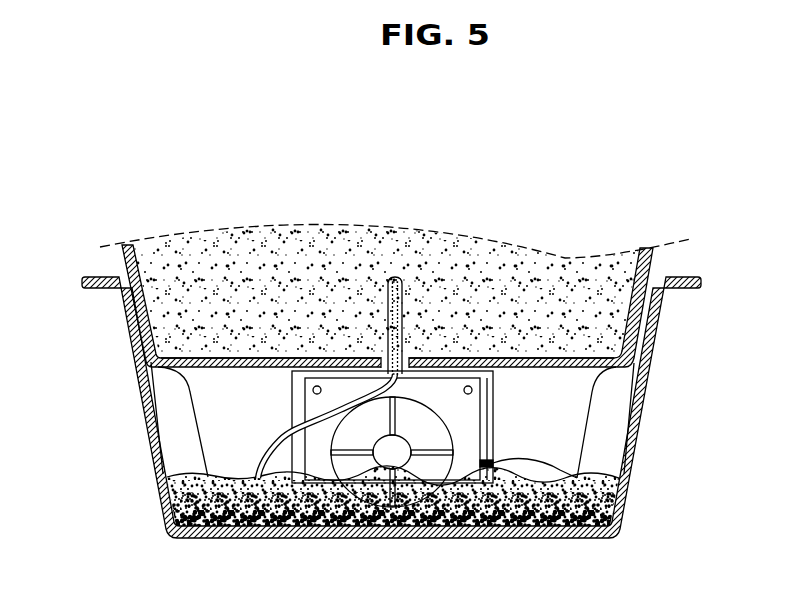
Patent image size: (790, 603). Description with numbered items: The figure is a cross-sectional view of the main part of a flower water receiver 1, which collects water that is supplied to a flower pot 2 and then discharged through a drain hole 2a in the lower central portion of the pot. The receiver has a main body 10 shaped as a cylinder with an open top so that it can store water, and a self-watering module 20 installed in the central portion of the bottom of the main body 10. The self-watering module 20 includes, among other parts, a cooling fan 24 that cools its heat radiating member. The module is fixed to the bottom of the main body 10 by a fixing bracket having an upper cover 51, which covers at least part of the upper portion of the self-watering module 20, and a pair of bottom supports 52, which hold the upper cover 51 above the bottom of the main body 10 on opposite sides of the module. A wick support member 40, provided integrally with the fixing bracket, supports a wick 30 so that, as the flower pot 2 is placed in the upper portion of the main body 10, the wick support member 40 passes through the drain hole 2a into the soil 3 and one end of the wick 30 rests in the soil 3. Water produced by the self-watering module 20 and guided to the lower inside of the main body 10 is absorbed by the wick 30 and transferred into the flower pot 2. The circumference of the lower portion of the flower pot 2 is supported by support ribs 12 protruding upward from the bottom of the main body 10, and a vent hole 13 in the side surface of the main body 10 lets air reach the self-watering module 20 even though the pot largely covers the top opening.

The flower water receiver 1 is at (97, 333).
The flower pot 2 is at (673, 260).
The drain hole 2a is at (350, 357).
The soil 3 is at (195, 246).
The main body 10 is at (674, 328).
The support rib 12 is at (617, 388).
The vent hole 13 is at (627, 442).
The self-watering module 20 is at (431, 496).
The cooling fan 24 is at (613, 492).
The wick 30 is at (274, 441).
The wick support member 40 is at (388, 308).
The upper cover 51 is at (463, 362).
The bottom support 52 is at (493, 403).